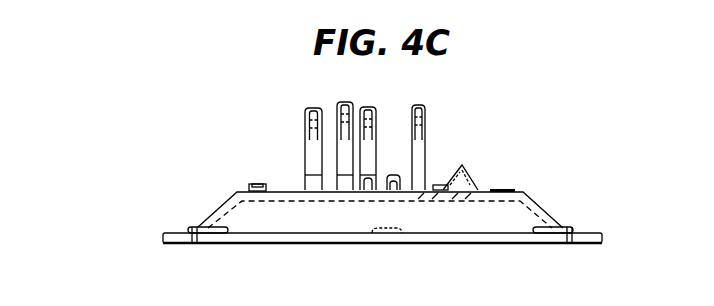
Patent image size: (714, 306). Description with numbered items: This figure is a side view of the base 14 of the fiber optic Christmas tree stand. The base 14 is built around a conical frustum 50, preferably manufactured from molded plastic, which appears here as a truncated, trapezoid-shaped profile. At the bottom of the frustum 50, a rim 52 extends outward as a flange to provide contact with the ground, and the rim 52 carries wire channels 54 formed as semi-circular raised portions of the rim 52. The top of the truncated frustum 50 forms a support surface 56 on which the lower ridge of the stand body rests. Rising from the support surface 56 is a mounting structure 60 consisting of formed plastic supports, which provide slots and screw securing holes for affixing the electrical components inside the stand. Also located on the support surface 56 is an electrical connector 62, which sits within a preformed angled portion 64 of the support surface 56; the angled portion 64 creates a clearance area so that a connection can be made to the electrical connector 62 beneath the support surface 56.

The base 14 is at (159, 107).
The conical frustum 50 is at (228, 199).
The rim 52 is at (172, 231).
The wire channels 54 is at (198, 243).
The support surface 56 is at (510, 188).
The mounting structure 60 is at (302, 108).
The electrical connector 62 is at (470, 173).
The preformed angled portion 64 is at (447, 185).